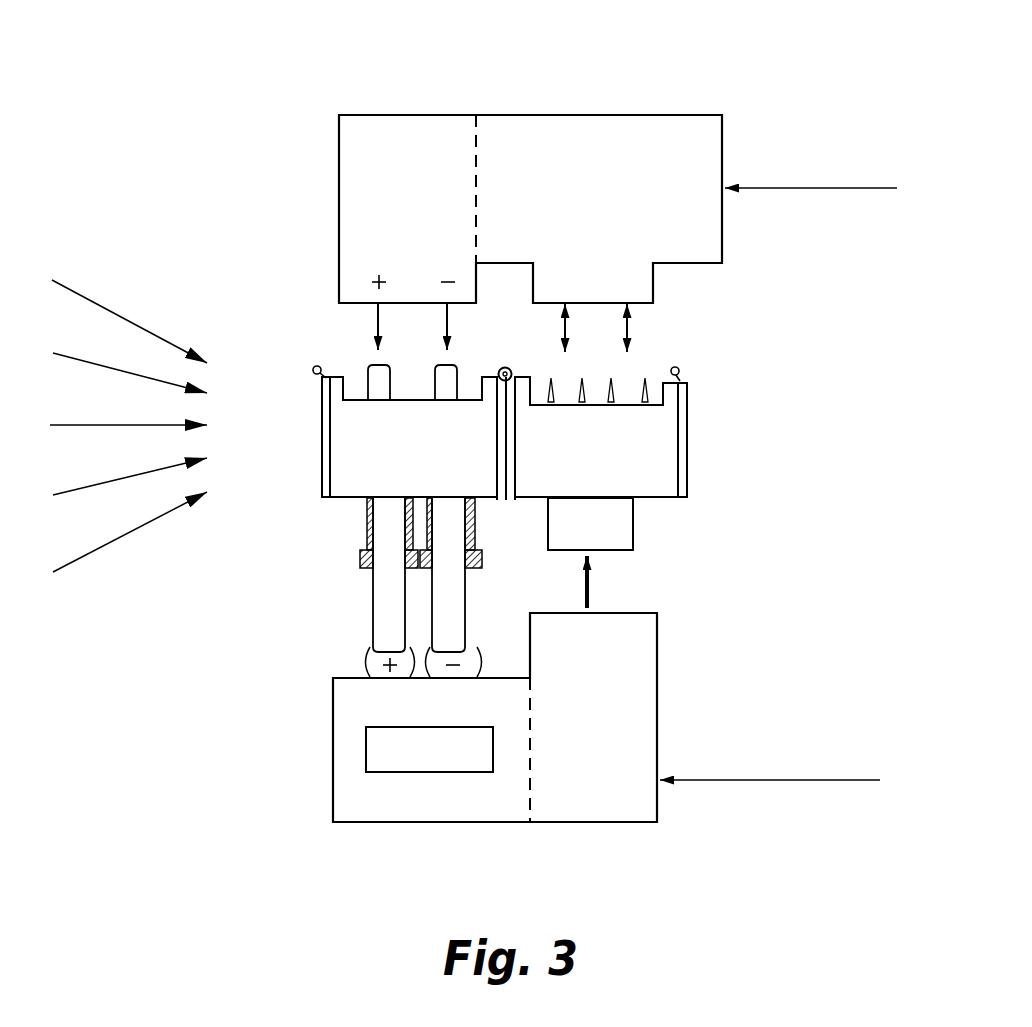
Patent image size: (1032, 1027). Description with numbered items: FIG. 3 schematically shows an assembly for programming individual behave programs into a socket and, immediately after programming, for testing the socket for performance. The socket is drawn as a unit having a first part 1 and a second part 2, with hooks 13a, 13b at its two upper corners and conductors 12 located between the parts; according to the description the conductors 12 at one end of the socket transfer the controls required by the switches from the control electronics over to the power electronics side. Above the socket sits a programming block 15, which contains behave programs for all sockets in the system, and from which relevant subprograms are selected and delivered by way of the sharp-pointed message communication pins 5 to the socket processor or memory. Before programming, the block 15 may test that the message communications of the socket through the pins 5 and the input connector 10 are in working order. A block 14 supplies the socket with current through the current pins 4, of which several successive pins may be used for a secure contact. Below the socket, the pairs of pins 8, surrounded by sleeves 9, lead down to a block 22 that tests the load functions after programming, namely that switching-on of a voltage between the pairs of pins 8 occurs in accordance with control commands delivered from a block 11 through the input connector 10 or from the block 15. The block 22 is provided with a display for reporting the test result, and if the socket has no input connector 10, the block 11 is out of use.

The light receiving part of probe unit 1 is at (313, 433).
The second part of probe unit 2 is at (693, 432).
The current pins 4 is at (445, 388).
The message communication pins 5 is at (611, 378).
The pairs of pins 8 is at (385, 607).
The probe sleeves 9 is at (365, 522).
The input connector 10 is at (620, 533).
The block 11 is at (640, 667).
The conductors 12 is at (503, 368).
The left hook 13a is at (314, 367).
The right hook 13b is at (679, 368).
The block 14 is at (360, 195).
The programming block 15 is at (603, 133).
The block 22 is at (353, 715).